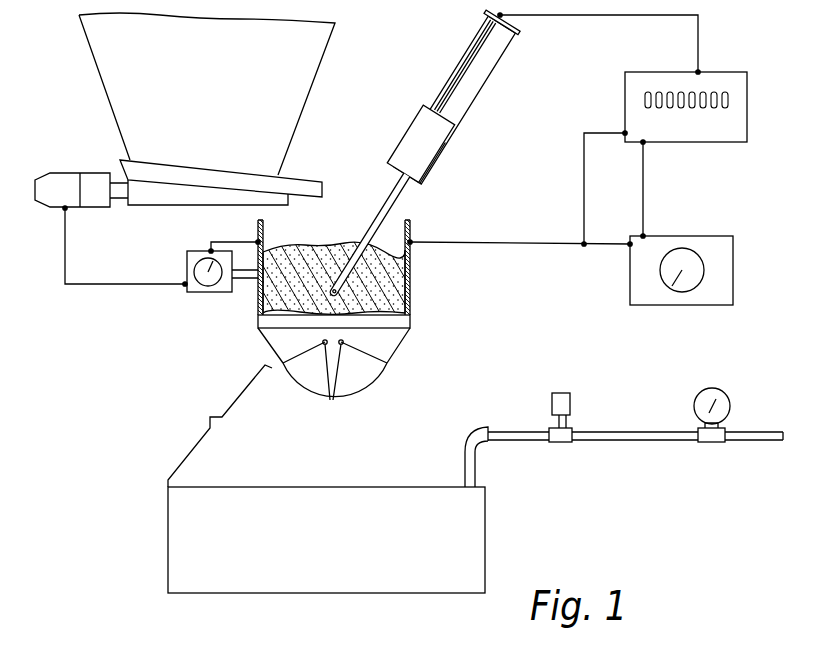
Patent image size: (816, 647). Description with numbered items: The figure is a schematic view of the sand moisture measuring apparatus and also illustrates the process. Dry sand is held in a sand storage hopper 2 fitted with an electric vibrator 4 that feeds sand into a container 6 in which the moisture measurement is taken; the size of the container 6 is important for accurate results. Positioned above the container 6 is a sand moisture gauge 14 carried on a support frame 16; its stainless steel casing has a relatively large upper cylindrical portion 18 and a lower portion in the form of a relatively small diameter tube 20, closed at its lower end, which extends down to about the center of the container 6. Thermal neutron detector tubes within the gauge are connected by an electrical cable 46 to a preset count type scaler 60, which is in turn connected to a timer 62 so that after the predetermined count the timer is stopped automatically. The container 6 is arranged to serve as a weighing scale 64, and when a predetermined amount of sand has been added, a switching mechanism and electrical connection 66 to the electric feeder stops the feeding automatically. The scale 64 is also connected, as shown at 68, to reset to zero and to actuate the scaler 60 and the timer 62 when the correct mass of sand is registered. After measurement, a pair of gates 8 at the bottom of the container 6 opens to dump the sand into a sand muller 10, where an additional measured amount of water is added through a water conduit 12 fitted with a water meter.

The sand storage hopper 2 is at (288, 134).
The electric vibrator 4 is at (227, 183).
The container 6 is at (410, 292).
The gates 8 is at (367, 393).
The sand muller 10 is at (292, 478).
The water conduit 12 is at (627, 437).
The sand moisture gauge 14 is at (432, 167).
The support frame 16 is at (477, 110).
The upper cylindrical portion 18 is at (397, 153).
The tube 20 is at (388, 197).
The electrical cable 46 is at (612, 17).
The preset count scaler 60 is at (732, 82).
The timer 62 is at (712, 228).
The weighing scale 64 is at (190, 291).
The electrical connection 66 is at (71, 285).
The scale connection 68 is at (490, 243).